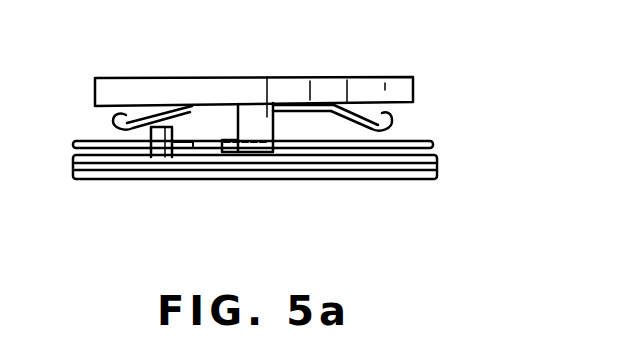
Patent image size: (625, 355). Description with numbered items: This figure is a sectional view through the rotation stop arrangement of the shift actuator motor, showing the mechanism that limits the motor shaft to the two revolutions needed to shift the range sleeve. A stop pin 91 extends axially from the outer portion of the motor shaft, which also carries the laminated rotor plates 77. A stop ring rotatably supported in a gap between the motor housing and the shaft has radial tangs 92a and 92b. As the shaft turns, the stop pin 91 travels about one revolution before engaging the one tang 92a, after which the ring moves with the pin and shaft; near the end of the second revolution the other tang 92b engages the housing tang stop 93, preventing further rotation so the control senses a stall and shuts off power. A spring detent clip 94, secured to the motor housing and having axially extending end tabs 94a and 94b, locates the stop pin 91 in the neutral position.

The laminated rotor plates 77 is at (377, 173).
The stop pin 91 is at (174, 125).
The housing tang stop 93 is at (262, 132).
The spring detent clip 94 is at (311, 105).
The axially extending end tab 94a is at (128, 118).
The axially extending end tab 94b is at (376, 116).
The radial tang 92a is at (188, 150).
The radial tang 92b is at (227, 152).